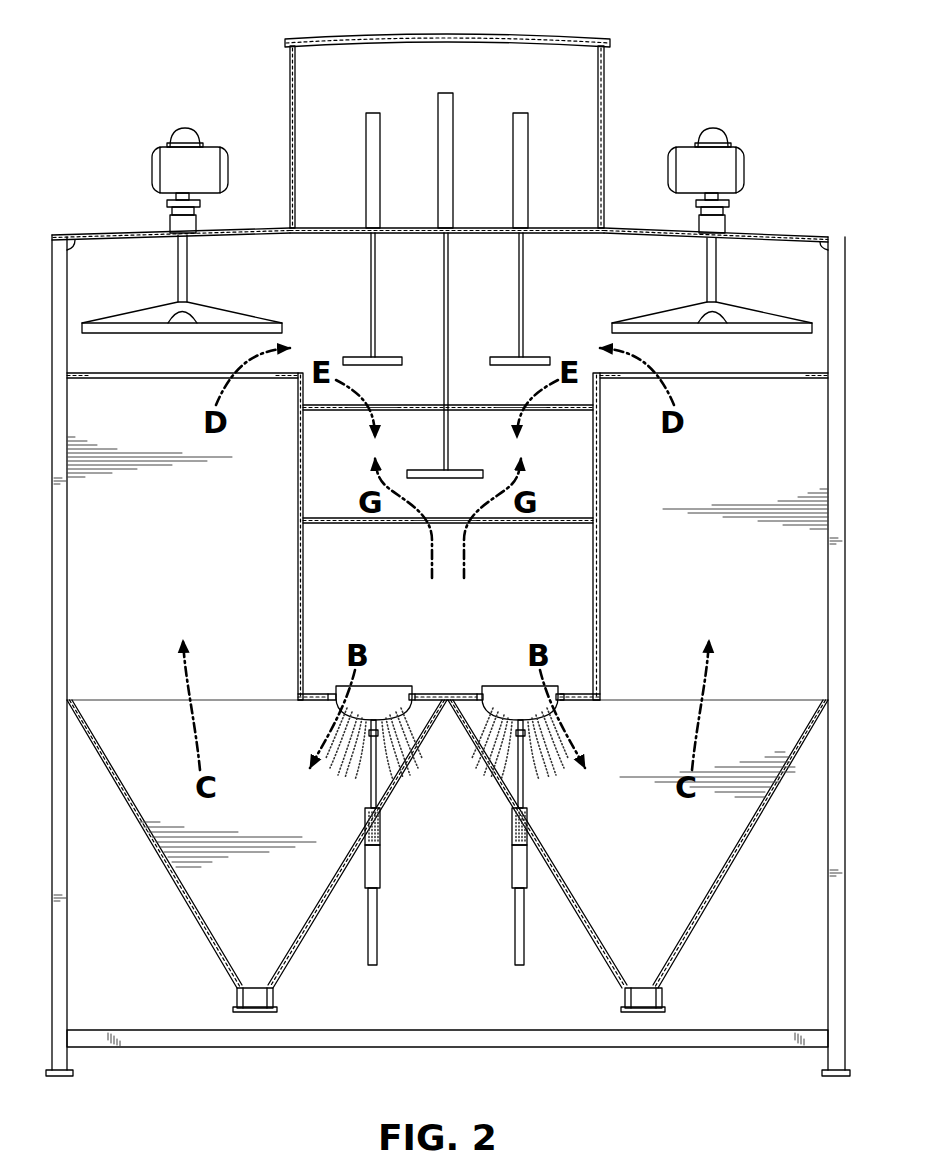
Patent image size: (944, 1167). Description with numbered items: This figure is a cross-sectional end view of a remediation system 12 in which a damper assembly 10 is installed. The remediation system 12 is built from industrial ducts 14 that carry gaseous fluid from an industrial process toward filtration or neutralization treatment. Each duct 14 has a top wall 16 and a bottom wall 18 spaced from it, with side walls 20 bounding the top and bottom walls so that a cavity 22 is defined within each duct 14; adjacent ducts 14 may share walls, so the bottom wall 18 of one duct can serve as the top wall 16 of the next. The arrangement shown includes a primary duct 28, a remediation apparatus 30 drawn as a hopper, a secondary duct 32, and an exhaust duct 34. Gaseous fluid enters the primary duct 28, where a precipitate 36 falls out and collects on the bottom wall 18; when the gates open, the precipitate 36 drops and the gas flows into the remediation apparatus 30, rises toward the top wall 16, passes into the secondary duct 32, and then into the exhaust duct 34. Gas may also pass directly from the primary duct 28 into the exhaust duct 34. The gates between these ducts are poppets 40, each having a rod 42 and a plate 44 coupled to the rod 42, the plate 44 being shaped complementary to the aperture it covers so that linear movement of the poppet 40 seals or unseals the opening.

The damper assembly 10 is at (377, 935).
The remediation system 12 is at (760, 88).
The industrial duct 14 is at (848, 410).
The top wall 16 is at (355, 233).
The bottom wall 18 is at (428, 404).
The side walls 20 is at (68, 275).
The cavity 22 is at (67, 540).
The primary duct 28 is at (296, 640).
The remediation apparatus 30 is at (100, 745).
The secondary duct 32 is at (82, 238).
The exhaust duct 34 is at (598, 460).
The precipitate 36 is at (346, 755).
The poppet 40 is at (172, 160).
The rod 42 is at (187, 282).
The plate 44 is at (272, 323).